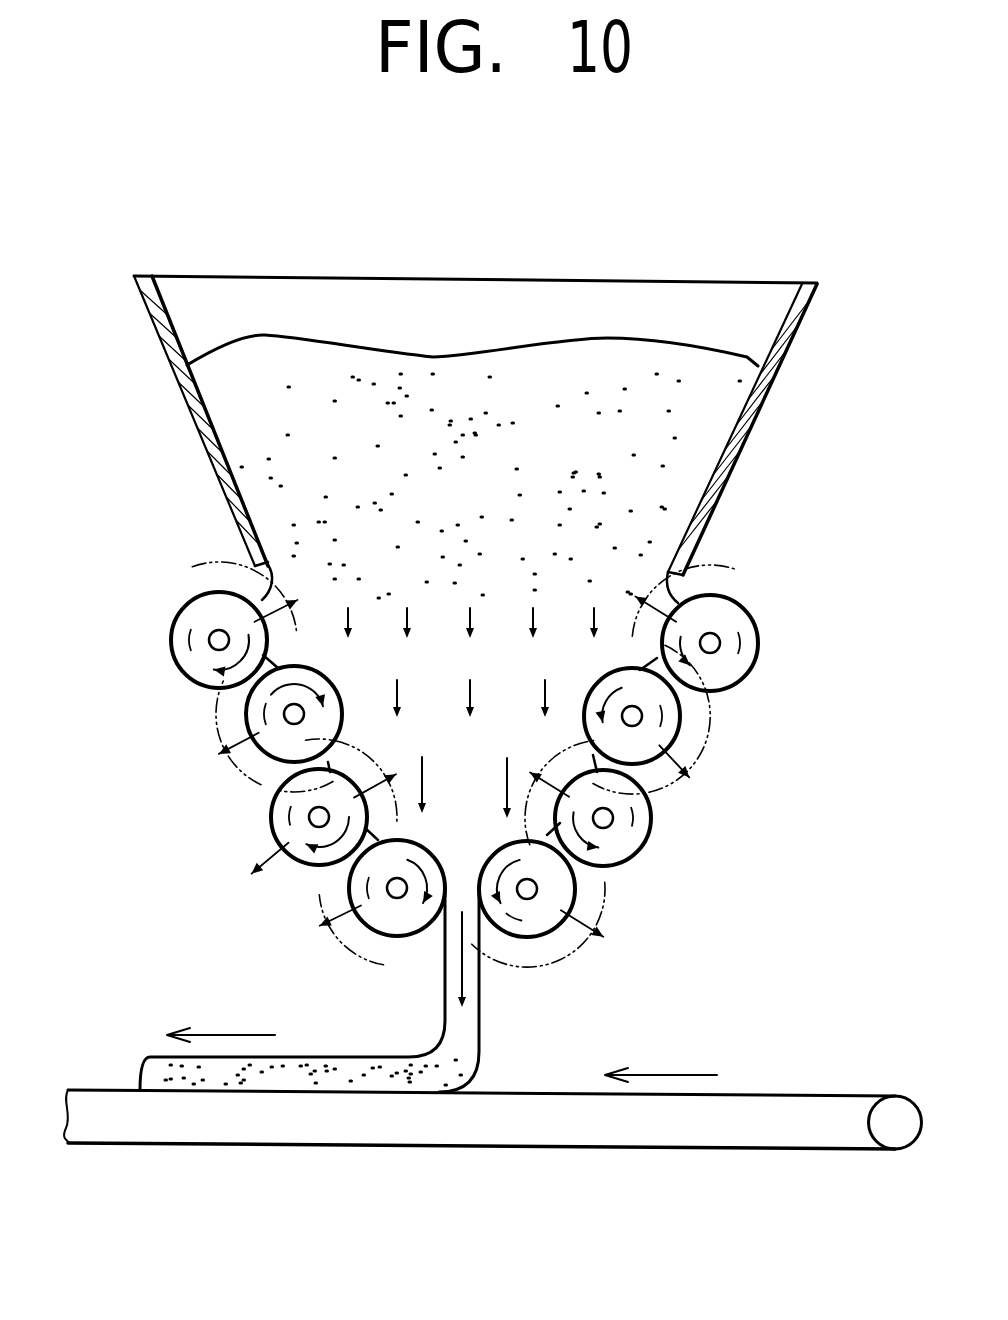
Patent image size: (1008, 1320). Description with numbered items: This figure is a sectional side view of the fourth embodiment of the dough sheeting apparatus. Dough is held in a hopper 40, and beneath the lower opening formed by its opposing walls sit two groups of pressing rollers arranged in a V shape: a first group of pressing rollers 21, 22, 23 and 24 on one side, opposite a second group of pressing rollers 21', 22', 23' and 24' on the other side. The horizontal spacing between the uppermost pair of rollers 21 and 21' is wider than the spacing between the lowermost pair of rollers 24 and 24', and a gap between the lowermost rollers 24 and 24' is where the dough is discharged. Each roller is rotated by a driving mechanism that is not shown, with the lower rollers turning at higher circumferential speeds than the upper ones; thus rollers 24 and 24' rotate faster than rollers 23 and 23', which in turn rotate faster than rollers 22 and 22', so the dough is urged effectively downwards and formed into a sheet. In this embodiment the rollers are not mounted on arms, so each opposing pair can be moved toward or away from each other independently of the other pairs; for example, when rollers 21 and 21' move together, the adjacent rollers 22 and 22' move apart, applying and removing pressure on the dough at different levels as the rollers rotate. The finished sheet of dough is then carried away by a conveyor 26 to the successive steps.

The hopper 40 is at (785, 358).
The pressing roller 21 is at (752, 628).
The pressing roller 22 is at (693, 719).
The pressing roller 23 is at (655, 803).
The pressing roller 24 is at (587, 904).
The pressing roller 21' is at (166, 625).
The pressing roller 22' is at (232, 729).
The pressing roller 23' is at (277, 806).
The pressing roller 24' is at (318, 902).
The conveyor 26 is at (793, 1095).